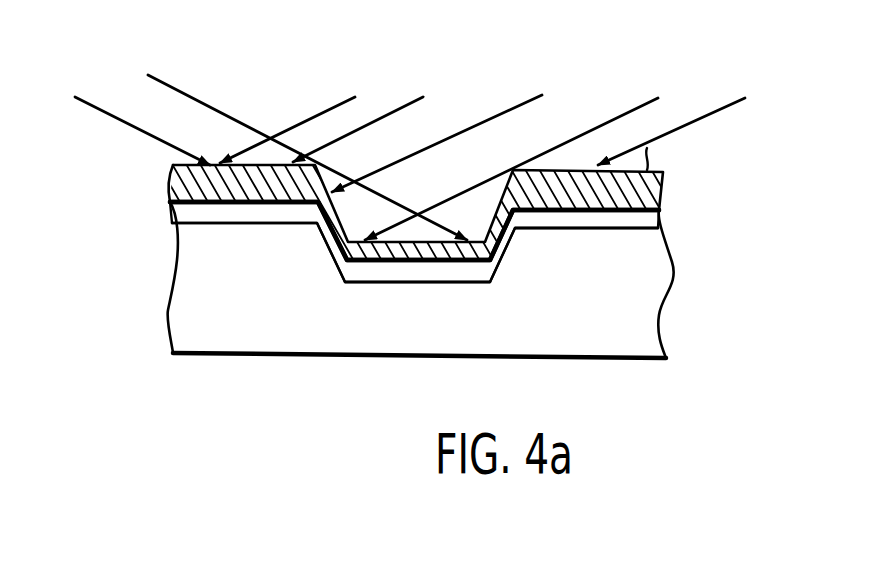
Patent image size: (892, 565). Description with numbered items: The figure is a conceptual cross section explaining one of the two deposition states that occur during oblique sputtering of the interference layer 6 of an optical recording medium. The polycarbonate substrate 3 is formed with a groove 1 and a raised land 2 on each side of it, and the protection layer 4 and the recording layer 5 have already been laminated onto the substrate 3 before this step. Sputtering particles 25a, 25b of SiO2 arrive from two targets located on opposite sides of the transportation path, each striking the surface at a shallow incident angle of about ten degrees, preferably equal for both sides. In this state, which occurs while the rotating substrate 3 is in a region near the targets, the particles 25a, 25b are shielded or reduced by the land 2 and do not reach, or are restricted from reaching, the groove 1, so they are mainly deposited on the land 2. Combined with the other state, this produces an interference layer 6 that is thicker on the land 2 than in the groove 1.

The groove 1 is at (417, 282).
The land 2 is at (577, 228).
The substrate 3 is at (652, 297).
The protection layer 4 is at (483, 242).
The recording layer 5 is at (652, 227).
The interference layer 6 is at (660, 198).
The sputtering particles 25a is at (151, 74).
The sputtering particles 25b is at (723, 108).